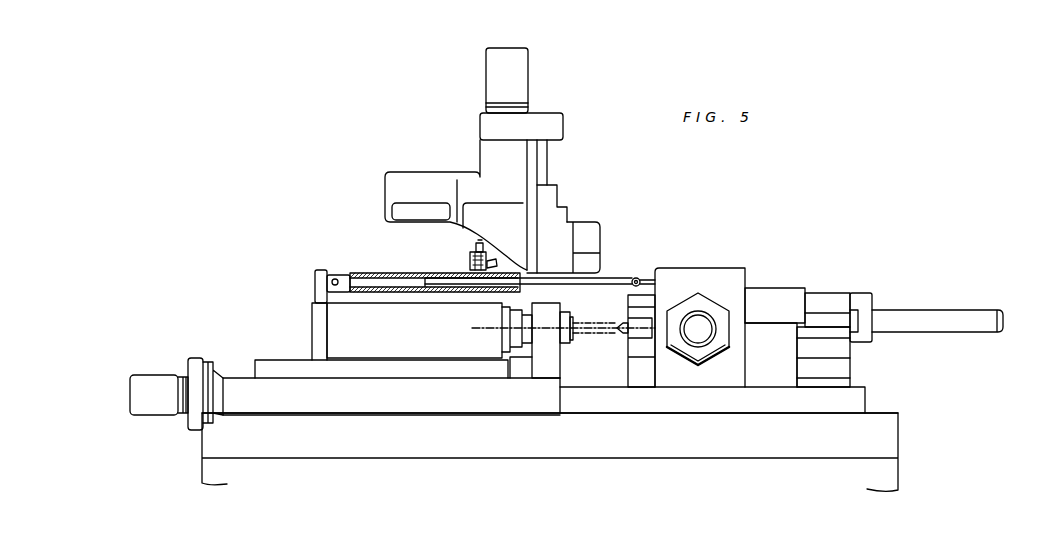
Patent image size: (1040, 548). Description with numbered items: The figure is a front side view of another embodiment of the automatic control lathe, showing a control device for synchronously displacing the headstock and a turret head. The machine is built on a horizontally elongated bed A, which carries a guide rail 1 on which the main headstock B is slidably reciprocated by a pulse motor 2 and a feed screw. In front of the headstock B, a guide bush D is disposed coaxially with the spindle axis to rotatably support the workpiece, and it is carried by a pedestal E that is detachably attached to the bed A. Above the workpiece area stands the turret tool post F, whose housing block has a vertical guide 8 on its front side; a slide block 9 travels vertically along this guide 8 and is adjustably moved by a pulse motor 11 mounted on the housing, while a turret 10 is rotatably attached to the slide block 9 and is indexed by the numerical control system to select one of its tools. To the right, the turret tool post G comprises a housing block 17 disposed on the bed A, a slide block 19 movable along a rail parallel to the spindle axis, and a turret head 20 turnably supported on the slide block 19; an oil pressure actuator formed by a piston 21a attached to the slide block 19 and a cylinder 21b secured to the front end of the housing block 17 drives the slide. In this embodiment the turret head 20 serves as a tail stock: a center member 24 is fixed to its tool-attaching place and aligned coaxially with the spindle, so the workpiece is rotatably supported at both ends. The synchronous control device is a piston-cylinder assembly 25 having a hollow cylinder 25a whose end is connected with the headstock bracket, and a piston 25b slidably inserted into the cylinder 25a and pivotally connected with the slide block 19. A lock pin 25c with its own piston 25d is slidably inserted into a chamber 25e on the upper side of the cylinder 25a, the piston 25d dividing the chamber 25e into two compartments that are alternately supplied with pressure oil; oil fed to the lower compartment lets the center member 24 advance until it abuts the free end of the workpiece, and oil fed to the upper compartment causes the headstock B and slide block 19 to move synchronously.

The guide rail 1 is at (697, 413).
The pulse motor 2 is at (149, 376).
The vertical guide 8 is at (548, 164).
The slide block 9 is at (557, 200).
The turret 10 is at (585, 232).
The pulse motor 11 is at (515, 87).
The housing block 17 is at (847, 370).
The slide block 19 is at (785, 294).
The turret head 20 is at (712, 287).
The piston 21a is at (827, 318).
The cylinder 21b is at (928, 314).
The center member 24 is at (626, 337).
The piston-cylinder assembly 25 is at (485, 263).
The hollow cylinder 25a is at (380, 273).
The piston 25b is at (572, 290).
The lock pin 25c is at (470, 262).
The piston 25d is at (479, 246).
The chamber 25e is at (491, 261).
The bed A is at (924, 456).
The main headstock B is at (387, 385).
The guide bush D is at (570, 340).
The pedestal E is at (555, 357).
The turret tool post F is at (437, 168).
The turret tool post G is at (748, 210).